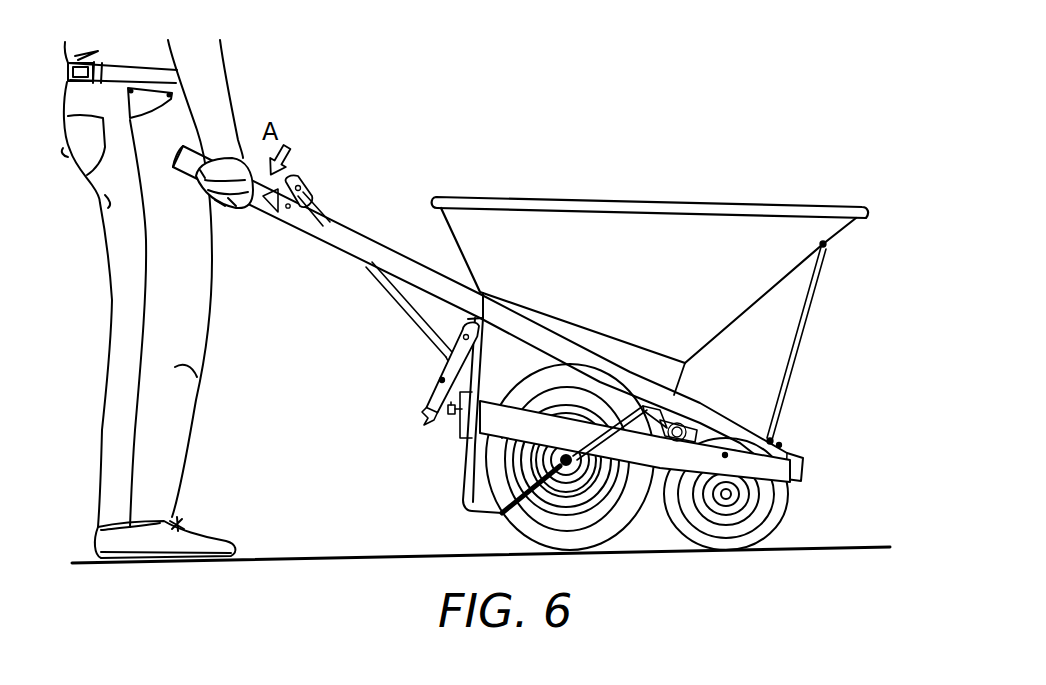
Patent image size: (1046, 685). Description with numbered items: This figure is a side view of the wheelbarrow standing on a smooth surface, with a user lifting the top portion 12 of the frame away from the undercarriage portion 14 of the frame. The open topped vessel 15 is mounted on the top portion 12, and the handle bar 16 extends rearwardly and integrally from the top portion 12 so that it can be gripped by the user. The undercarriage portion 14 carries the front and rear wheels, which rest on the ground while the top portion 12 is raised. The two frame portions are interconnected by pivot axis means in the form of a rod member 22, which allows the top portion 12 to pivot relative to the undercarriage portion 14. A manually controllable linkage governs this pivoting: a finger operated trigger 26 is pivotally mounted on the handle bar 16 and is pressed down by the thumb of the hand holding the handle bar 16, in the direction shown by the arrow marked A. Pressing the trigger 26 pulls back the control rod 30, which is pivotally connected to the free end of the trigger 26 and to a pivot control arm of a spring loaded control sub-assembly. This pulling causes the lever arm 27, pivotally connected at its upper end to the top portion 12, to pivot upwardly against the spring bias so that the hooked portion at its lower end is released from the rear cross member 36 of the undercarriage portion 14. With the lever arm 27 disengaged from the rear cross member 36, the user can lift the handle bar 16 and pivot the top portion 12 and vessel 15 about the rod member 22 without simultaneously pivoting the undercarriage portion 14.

The top portion of the frame 12 is at (683, 403).
The undercarriage portion of the frame 14 is at (497, 444).
The open topped vessel 15 is at (648, 204).
The handle bar 16 is at (342, 230).
The rod member 22 is at (686, 430).
The finger operated trigger 26 is at (302, 184).
The lever arm 27 is at (413, 383).
The control rod 30 is at (383, 290).
The rear cross member 36 is at (452, 416).